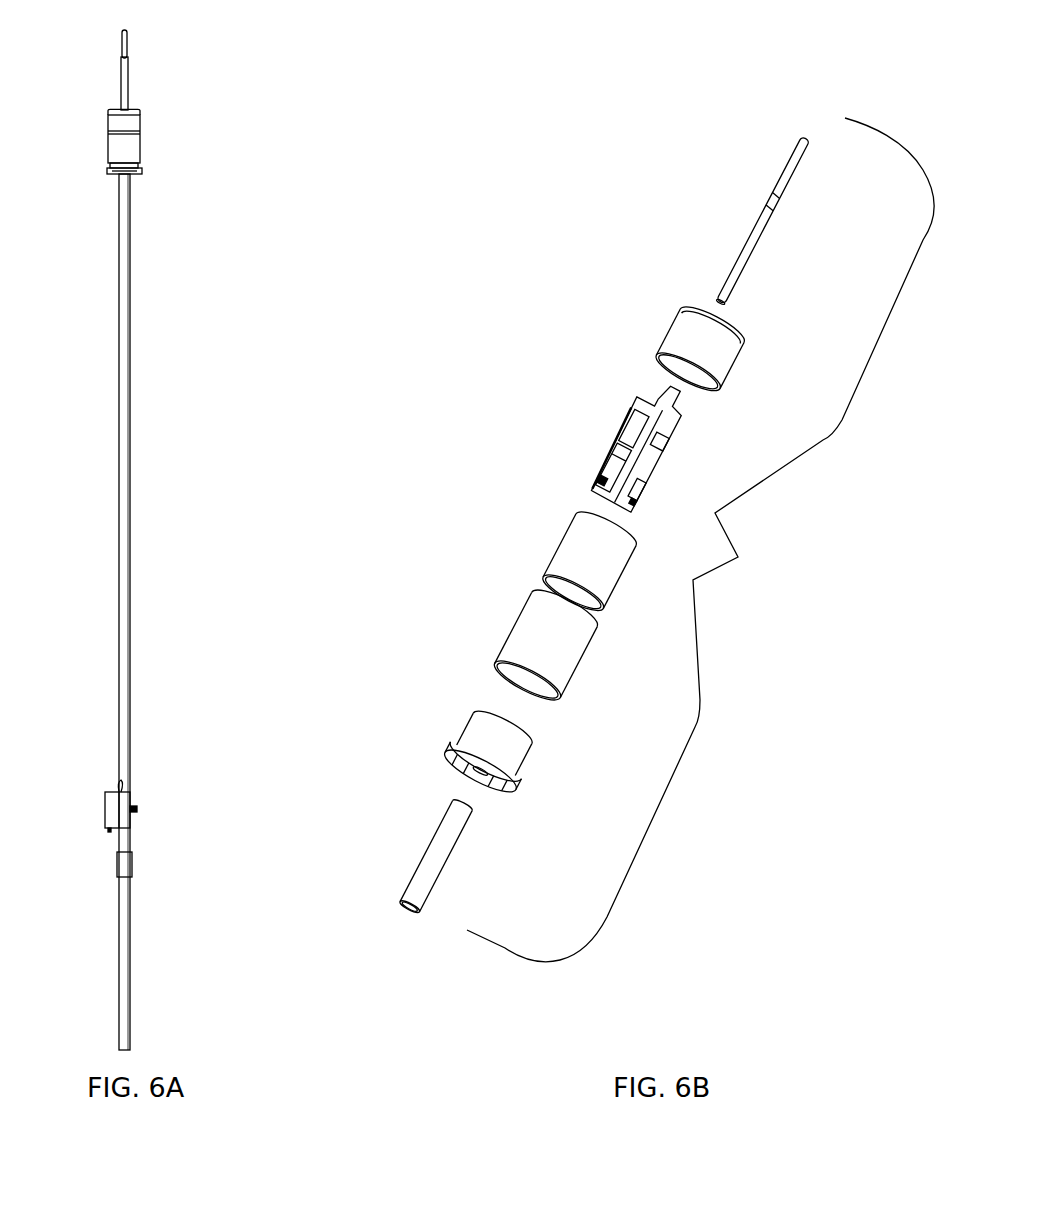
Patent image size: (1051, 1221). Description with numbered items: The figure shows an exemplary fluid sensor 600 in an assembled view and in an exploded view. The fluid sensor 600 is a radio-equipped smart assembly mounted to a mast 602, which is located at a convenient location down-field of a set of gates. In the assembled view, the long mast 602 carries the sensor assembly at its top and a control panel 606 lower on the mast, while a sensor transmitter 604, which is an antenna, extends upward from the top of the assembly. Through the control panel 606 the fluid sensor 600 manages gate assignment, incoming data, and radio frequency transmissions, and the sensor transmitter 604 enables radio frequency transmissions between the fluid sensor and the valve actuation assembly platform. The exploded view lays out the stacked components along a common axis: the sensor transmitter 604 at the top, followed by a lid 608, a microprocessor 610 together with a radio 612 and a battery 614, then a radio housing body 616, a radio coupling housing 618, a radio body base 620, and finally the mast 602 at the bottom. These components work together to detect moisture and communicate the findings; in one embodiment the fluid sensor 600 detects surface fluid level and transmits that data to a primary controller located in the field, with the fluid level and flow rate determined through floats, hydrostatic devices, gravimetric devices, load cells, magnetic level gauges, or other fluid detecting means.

In FIG. 6A, the fluid sensor 600 is at (290, 73).
In FIG. 6B, the fluid sensor 600 is at (700, 540).
In FIG. 6A, the mast 602 is at (125, 387).
In FIG. 6B, the mast 602 is at (432, 863).
In FIG. 6A, the sensor transmitter 604 is at (125, 91).
In FIG. 6B, the sensor transmitter 604 is at (755, 228).
In FIG. 6A, the control panel 606 is at (107, 822).
In FIG. 6B, the lid 608 is at (680, 325).
In FIG. 6B, the microprocessor 610 is at (545, 423).
In FIG. 6B, the radio 612 is at (633, 417).
In FIG. 6B, the battery 614 is at (608, 465).
In FIG. 6B, the radio housing body 616 is at (590, 562).
In FIG. 6B, the radio coupling housing 618 is at (512, 650).
In FIG. 6B, the radio body base 620 is at (477, 737).